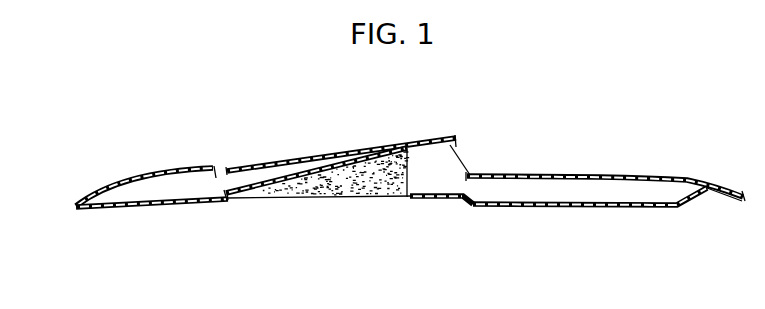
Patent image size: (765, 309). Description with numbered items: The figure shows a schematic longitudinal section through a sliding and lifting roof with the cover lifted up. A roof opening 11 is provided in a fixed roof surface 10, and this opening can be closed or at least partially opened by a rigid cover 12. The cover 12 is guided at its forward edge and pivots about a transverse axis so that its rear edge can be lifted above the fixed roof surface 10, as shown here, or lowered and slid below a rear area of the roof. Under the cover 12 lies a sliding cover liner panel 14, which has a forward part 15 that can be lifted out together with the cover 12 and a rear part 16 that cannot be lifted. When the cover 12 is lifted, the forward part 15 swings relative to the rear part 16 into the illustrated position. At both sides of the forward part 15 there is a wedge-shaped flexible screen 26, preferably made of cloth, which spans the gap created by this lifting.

The fixed roof surface 10 is at (608, 173).
The roof opening 11 is at (450, 169).
The rigid cover 12 is at (338, 154).
The sliding cover liner panel 14 is at (317, 201).
The forward part of liner panel 15 is at (298, 181).
The rear part of liner panel 16 is at (434, 198).
The wedge-shaped flexible screen 26 is at (347, 180).